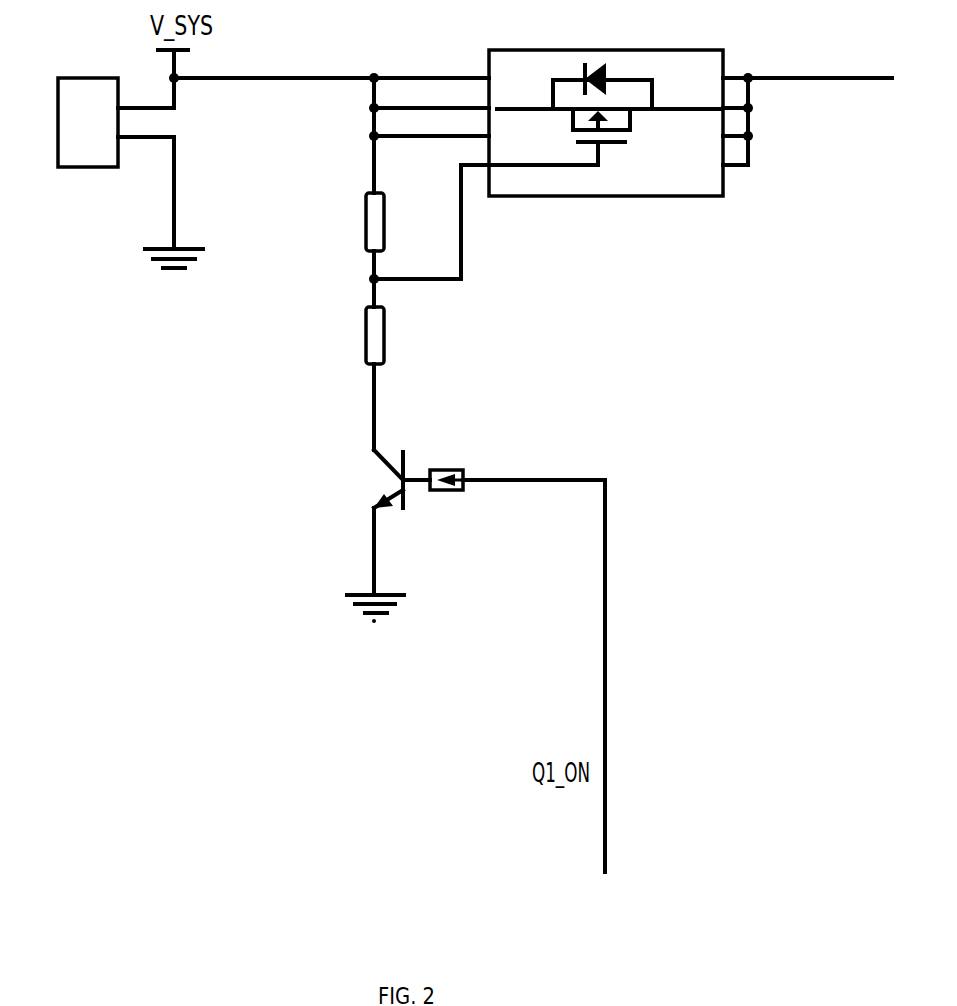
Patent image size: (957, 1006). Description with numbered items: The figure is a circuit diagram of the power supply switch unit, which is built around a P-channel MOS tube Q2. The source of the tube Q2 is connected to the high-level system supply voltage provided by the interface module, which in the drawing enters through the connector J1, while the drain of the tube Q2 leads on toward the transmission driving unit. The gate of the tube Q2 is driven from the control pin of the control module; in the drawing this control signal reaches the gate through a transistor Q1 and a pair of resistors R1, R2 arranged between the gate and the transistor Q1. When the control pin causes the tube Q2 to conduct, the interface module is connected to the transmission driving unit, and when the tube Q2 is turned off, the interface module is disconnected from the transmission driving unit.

The connector J1 is at (87, 109).
The PMOS tube Q2 is at (613, 121).
The resistor R1 (10K) R1 is at (398, 221).
The resistor R2 (2K) R2 is at (393, 336).
The digital transistor Q1 (DTC144EE) Q1 is at (425, 480).